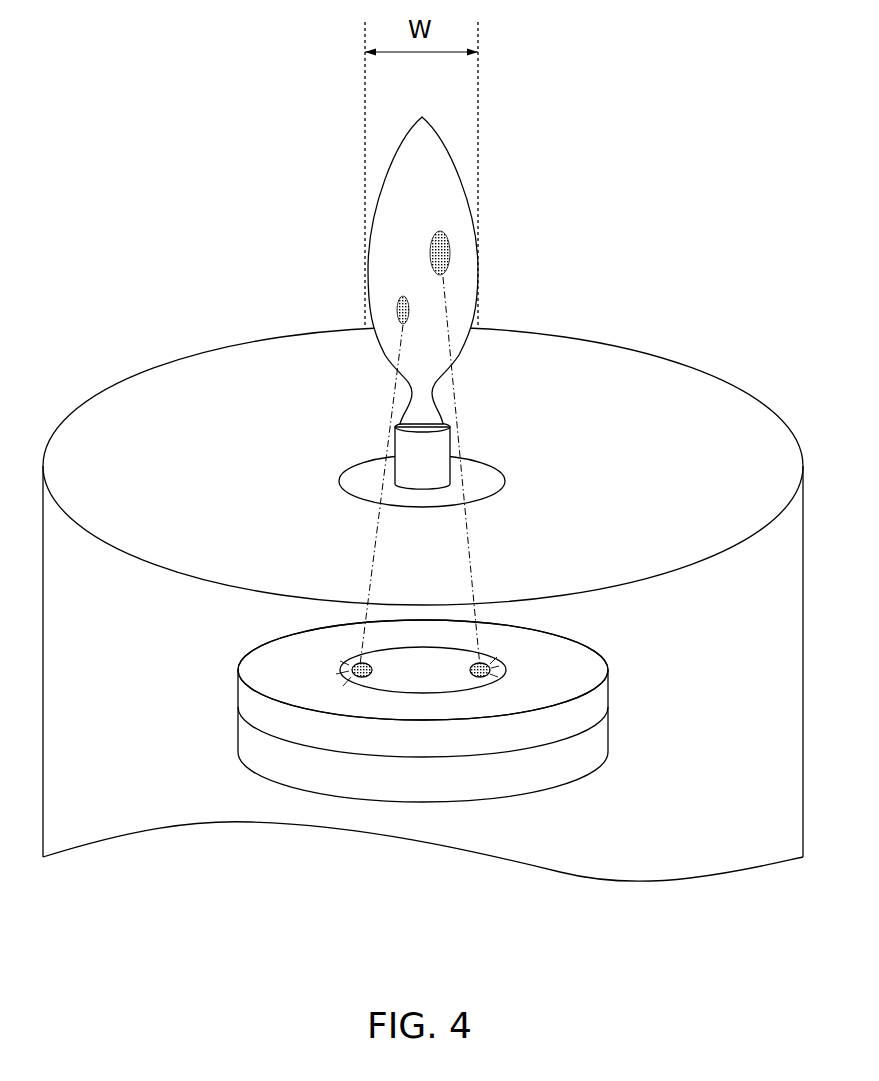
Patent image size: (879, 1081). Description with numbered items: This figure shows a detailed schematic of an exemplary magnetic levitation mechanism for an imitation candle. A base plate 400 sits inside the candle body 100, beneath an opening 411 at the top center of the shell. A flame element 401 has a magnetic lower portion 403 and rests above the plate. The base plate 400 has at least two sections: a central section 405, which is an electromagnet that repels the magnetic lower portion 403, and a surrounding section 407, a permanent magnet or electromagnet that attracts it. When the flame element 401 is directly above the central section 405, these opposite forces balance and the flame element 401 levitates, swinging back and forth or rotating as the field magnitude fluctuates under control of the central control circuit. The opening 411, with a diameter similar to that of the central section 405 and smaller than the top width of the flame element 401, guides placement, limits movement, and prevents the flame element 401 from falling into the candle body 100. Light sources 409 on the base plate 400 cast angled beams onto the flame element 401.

The candle body 100 is at (140, 402).
The base plate 400 is at (237, 697).
The flame element 401 is at (458, 240).
The magnetic lower portion 403 is at (458, 448).
The central section 405 is at (400, 658).
The surrounding section 407 is at (588, 662).
The light sources 409 is at (479, 678).
The opening 411 is at (352, 468).